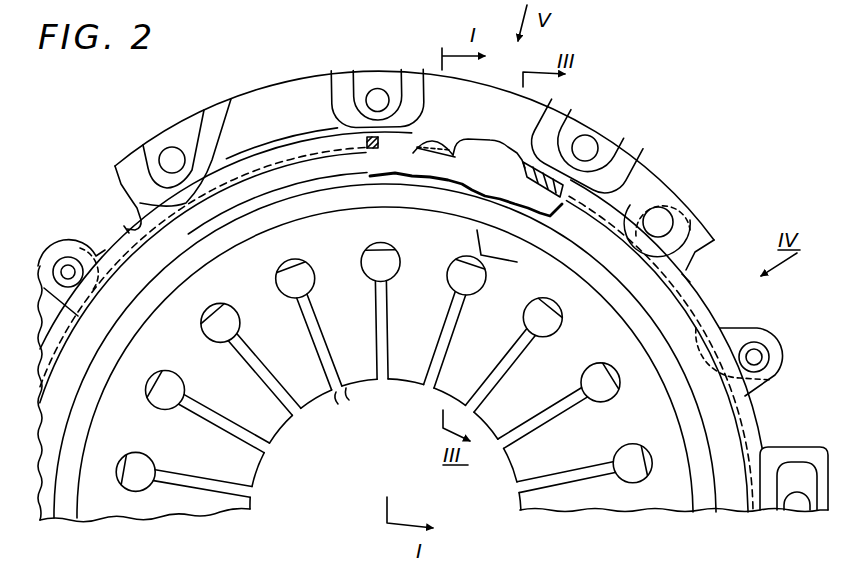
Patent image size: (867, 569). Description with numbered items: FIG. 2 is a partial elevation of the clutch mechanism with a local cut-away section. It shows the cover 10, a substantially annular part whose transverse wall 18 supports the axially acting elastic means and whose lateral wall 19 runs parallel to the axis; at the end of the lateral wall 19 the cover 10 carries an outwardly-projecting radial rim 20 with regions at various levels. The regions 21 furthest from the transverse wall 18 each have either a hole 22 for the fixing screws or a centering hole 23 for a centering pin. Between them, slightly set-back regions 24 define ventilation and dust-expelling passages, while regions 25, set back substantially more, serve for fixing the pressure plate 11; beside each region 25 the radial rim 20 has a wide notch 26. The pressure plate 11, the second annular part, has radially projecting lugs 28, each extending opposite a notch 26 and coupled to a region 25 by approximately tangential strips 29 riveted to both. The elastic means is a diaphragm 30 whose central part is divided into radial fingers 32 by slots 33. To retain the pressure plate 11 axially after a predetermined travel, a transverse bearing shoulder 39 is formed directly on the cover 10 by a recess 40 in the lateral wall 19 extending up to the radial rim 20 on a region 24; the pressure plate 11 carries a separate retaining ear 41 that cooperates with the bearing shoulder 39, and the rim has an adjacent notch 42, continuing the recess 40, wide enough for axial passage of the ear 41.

The cover 10 is at (701, 204).
The pressure plate 11 is at (295, 270).
The transverse wall 18 is at (241, 214).
The lateral wall 19 is at (294, 162).
The radial rim 20 is at (294, 76).
The regions 21 is at (148, 163).
The hole 22 is at (168, 153).
The centering hole 23 is at (377, 97).
The regions 24 is at (233, 110).
The regions 25 is at (654, 180).
The notch 26 is at (129, 232).
The radial lug 28 is at (80, 250).
The strips 29 is at (33, 266).
The diaphragm 30 is at (410, 386).
The radial fingers 32 is at (278, 433).
The slots 33 is at (339, 396).
The bearing shoulder 39 is at (417, 140).
The recess 40 is at (527, 187).
The ear 41 is at (430, 140).
The notch 42 is at (473, 142).